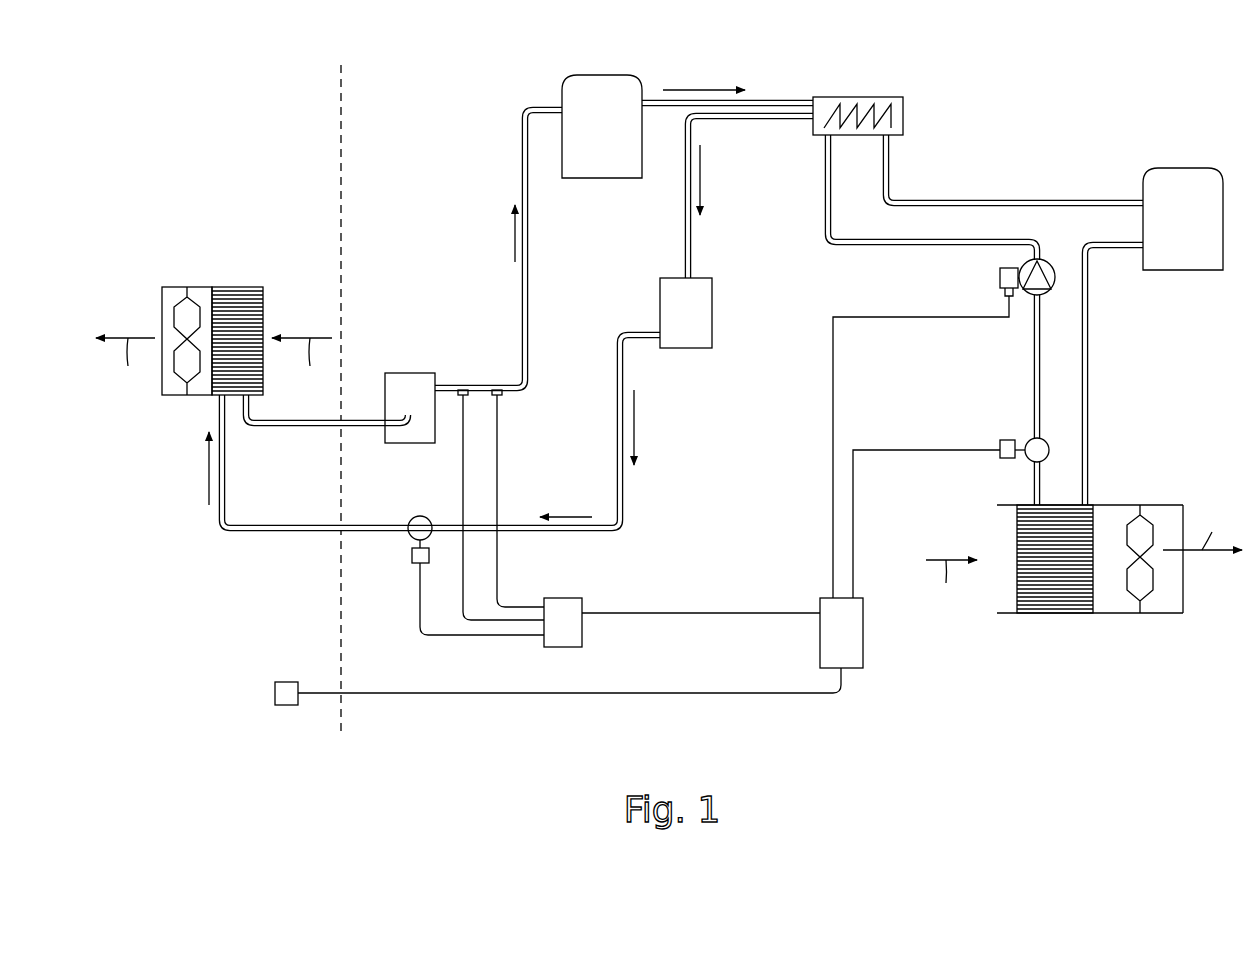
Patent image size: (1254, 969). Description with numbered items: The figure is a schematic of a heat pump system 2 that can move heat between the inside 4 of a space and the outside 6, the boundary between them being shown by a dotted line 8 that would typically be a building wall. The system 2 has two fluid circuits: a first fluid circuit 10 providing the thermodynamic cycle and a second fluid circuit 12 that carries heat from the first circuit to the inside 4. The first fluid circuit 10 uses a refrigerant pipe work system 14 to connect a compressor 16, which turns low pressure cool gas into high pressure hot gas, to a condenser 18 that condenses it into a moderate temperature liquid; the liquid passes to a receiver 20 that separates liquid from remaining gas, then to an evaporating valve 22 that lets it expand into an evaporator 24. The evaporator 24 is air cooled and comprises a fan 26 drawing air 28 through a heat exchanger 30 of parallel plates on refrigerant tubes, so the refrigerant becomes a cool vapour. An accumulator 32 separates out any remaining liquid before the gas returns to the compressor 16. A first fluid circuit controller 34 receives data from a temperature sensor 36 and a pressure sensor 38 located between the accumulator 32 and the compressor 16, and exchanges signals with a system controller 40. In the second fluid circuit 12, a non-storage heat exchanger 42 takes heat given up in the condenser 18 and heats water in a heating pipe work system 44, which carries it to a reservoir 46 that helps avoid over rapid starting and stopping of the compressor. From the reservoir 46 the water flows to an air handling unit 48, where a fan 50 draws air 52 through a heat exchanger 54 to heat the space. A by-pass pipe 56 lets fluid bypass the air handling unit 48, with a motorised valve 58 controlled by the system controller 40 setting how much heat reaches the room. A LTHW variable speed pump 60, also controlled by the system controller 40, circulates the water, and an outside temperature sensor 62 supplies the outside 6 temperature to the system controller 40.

The system 2 is at (953, 126).
The inside 4 is at (378, 155).
The outside 6 is at (244, 155).
The dotted line 8 is at (342, 200).
The first fluid circuit 10 is at (529, 62).
The second fluid circuit 12 is at (1098, 357).
The refrigerant pipe work system 14 is at (527, 258).
The compressor 16 is at (588, 140).
The condenser 18 is at (845, 103).
The receiver 20 is at (673, 325).
The evaporating valve 22 is at (420, 523).
The evaporator 24 is at (198, 287).
The fan 26 is at (183, 312).
The air 28 is at (214, 367).
The heat exchanger 30 is at (257, 305).
The accumulator 32 is at (405, 373).
The first fluid circuit controller 34 is at (582, 604).
The temperature sensor 36 is at (500, 395).
The pressure sensor 38 is at (465, 390).
The system controller 40 is at (828, 645).
The non-storage heat exchanger 42 is at (890, 100).
The heating pipe work system 44 is at (988, 205).
The reservoir 46 is at (1170, 235).
The air handling unit 48 is at (1058, 615).
The fan 50 is at (1145, 527).
The air 52 is at (1084, 561).
The heat exchanger 54 is at (1030, 547).
The by-pass pipe 56 is at (1050, 449).
The motorised valve 58 is at (1028, 440).
The LTHW variable speed pump 60 is at (1040, 268).
The outside temperature sensor 62 is at (277, 690).